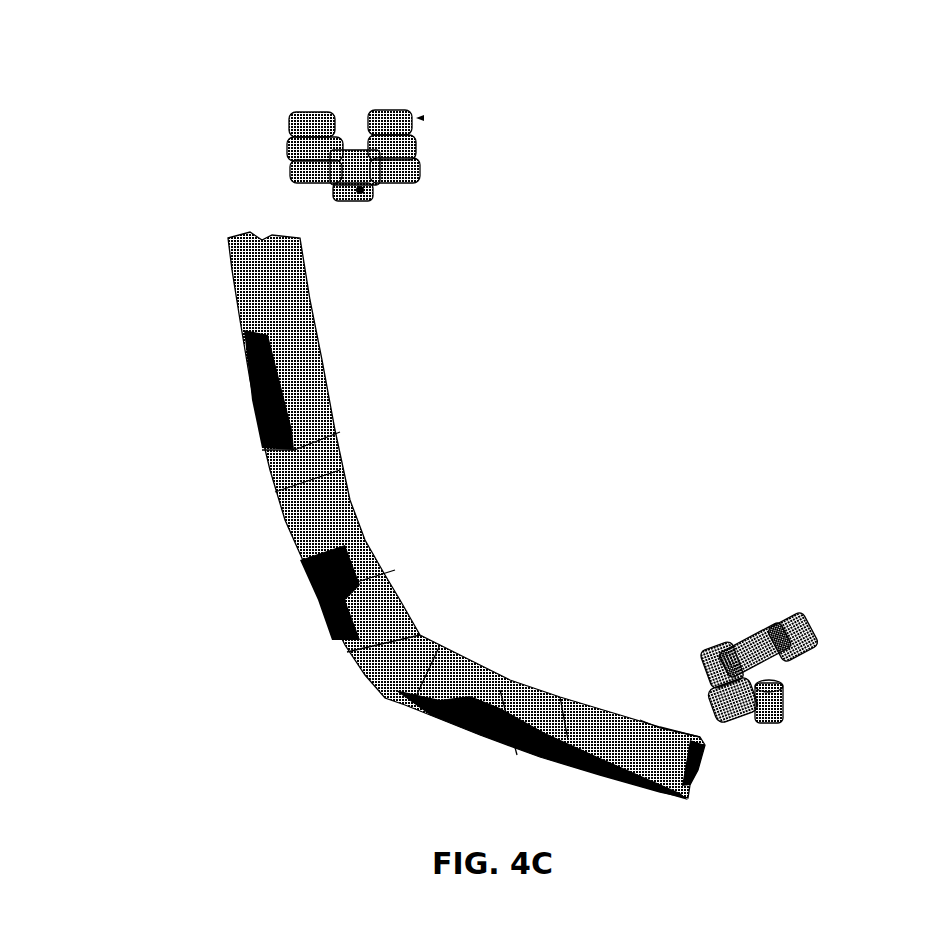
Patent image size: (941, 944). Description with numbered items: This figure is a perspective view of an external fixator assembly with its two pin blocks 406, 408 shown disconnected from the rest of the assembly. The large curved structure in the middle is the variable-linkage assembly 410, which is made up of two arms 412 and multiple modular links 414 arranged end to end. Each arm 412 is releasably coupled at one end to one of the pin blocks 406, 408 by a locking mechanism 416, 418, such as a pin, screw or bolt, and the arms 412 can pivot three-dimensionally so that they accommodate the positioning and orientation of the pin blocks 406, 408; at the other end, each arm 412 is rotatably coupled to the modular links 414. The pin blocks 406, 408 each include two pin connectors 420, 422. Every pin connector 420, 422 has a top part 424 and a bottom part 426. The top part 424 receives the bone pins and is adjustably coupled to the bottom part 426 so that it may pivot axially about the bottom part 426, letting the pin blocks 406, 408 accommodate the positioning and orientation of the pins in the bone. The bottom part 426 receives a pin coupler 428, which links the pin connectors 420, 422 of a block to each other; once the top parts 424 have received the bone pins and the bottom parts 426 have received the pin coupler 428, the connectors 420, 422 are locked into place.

The pin block 406 is at (413, 145).
The pin block 408 is at (772, 625).
The variable-linkage assembly 410 is at (413, 443).
The arm 412 is at (255, 340).
The modular link 414 is at (517, 755).
The locking mechanism 416 is at (373, 192).
The locking mechanism 418 is at (728, 650).
The pin connector 420 is at (308, 110).
The pin connector 422 is at (390, 110).
The top part 424 is at (289, 122).
The bottom part 426 is at (297, 145).
The pin coupler 428 is at (287, 167).